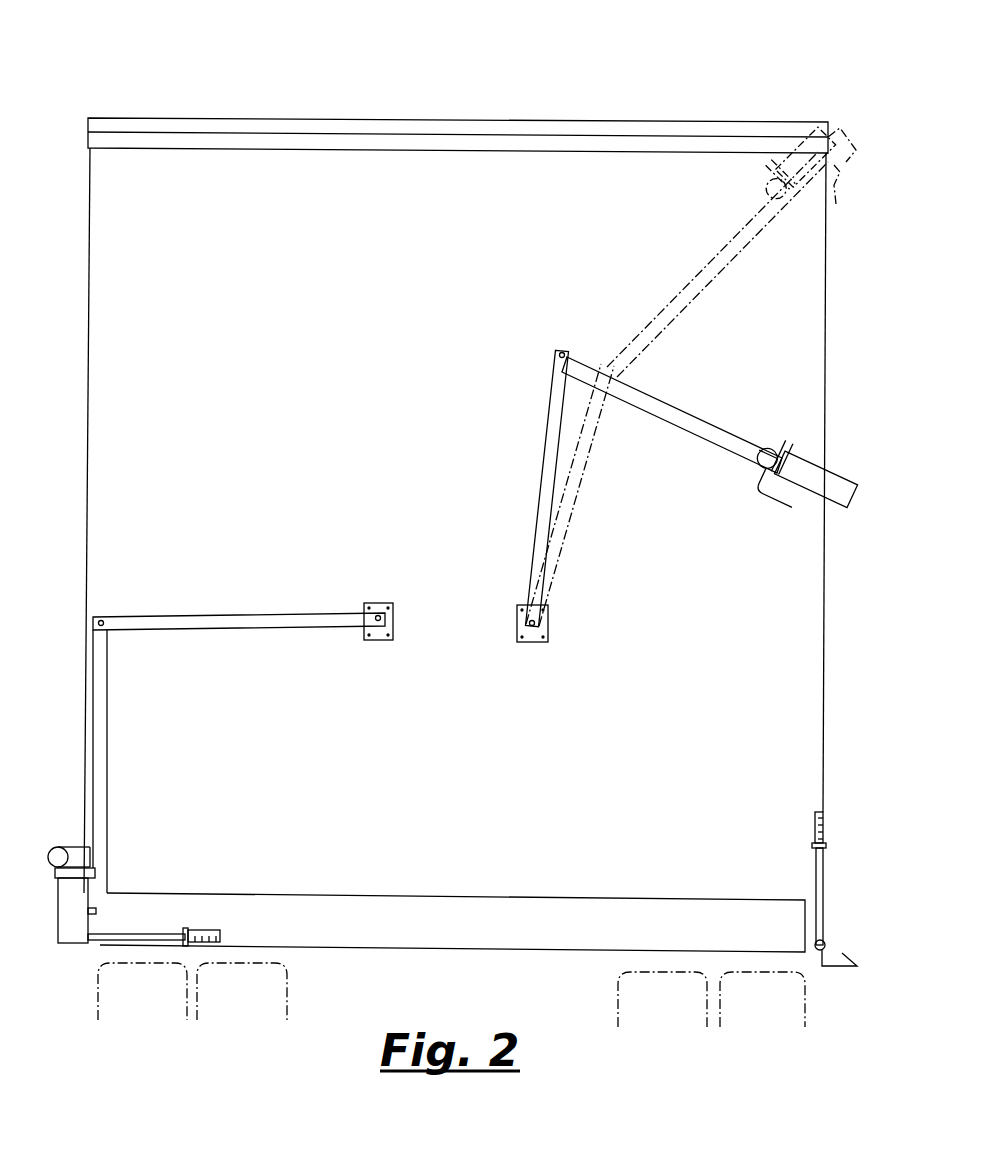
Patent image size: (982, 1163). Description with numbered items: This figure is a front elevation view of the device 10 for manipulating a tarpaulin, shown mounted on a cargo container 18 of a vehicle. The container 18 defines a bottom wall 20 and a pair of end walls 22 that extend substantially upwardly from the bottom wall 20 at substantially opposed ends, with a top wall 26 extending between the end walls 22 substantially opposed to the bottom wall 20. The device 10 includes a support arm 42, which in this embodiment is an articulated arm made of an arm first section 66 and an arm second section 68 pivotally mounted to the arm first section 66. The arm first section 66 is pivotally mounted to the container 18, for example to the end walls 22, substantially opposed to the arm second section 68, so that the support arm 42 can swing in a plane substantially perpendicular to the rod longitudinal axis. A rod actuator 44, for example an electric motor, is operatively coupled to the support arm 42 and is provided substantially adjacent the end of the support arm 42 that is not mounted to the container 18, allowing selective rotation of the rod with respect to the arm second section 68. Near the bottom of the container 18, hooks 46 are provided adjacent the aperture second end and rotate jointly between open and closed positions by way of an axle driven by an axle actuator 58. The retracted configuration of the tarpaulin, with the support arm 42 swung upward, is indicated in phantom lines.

The device 10 is at (455, 543).
The cargo container 18 is at (575, 117).
The bottom wall 20 is at (460, 945).
The end wall 22 is at (586, 753).
The top wall 26 is at (520, 120).
The support arm 42 is at (184, 616).
The rod actuator 44 is at (830, 480).
The hook 46 is at (855, 962).
The axle actuator 58 is at (815, 818).
The arm first section 66 is at (712, 445).
The arm second section 68 is at (550, 395).